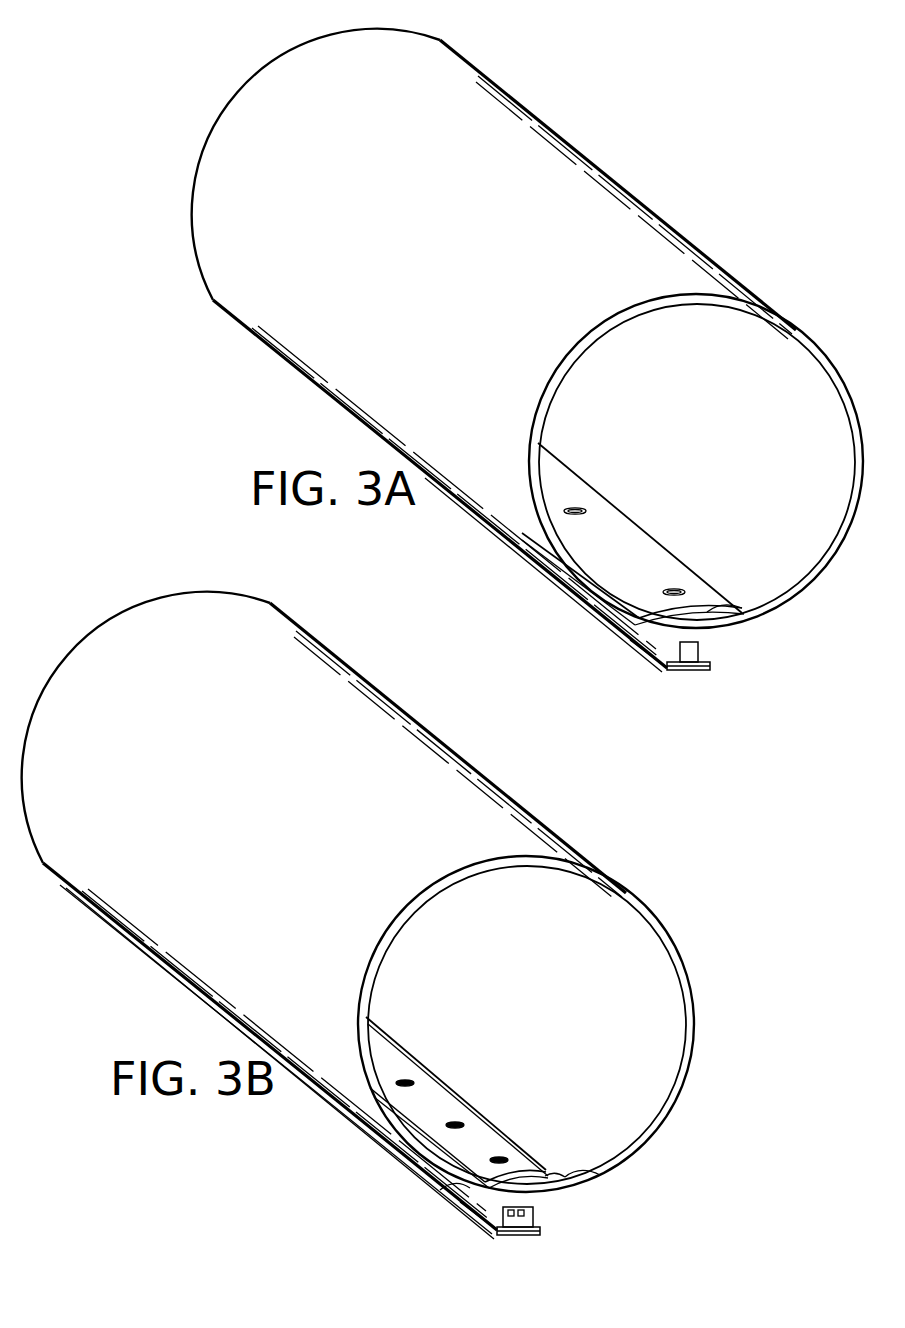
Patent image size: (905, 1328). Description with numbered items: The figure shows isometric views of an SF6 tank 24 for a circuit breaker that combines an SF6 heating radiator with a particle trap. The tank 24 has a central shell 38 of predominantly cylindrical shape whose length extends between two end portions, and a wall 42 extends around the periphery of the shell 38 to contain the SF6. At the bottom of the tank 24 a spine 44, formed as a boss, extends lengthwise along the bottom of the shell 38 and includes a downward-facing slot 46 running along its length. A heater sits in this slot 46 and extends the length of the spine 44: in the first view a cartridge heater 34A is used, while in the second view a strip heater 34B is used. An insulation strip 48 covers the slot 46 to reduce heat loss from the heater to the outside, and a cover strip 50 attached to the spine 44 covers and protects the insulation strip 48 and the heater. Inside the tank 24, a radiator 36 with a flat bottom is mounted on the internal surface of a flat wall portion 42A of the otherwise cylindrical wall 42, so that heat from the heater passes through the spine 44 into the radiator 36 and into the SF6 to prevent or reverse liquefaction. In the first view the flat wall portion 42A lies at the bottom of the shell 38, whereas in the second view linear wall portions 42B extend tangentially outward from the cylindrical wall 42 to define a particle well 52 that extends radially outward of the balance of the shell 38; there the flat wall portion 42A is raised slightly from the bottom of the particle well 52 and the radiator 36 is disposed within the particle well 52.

In FIG. 3A, the tank 24 is at (728, 89).
In FIG. 3B, the tank 24 is at (607, 805).
In FIG. 3A, the cartridge heater 34A is at (709, 685).
In FIG. 3B, the strip heater 34B is at (550, 1247).
In FIG. 3A, the radiator 36 is at (732, 597).
In FIG. 3B, the radiator 36 is at (528, 1152).
In FIG. 3A, the central shell 38 is at (683, 232).
In FIG. 3B, the central shell 38 is at (532, 808).
In FIG. 3A, the wall 42 is at (848, 518).
In FIG. 3B, the wall 42 is at (680, 1080).
In FIG. 3A, the flat wall portion 42A is at (737, 612).
In FIG. 3B, the flat wall portion 42A is at (565, 1177).
In FIG. 3B, the linear wall portions 42B is at (585, 1175).
In FIG. 3A, the spine 44 is at (650, 643).
In FIG. 3B, the spine 44 is at (480, 1205).
In FIG. 3A, the slot 46 is at (700, 650).
In FIG. 3B, the slot 46 is at (540, 1208).
In FIG. 3A, the insulation strip 48 is at (706, 668).
In FIG. 3B, the insulation strip 48 is at (541, 1232).
In FIG. 3A, the cover strip 50 is at (675, 672).
In FIG. 3B, the cover strip 50 is at (546, 1258).
In FIG. 3B, the particle well 52 is at (552, 1168).